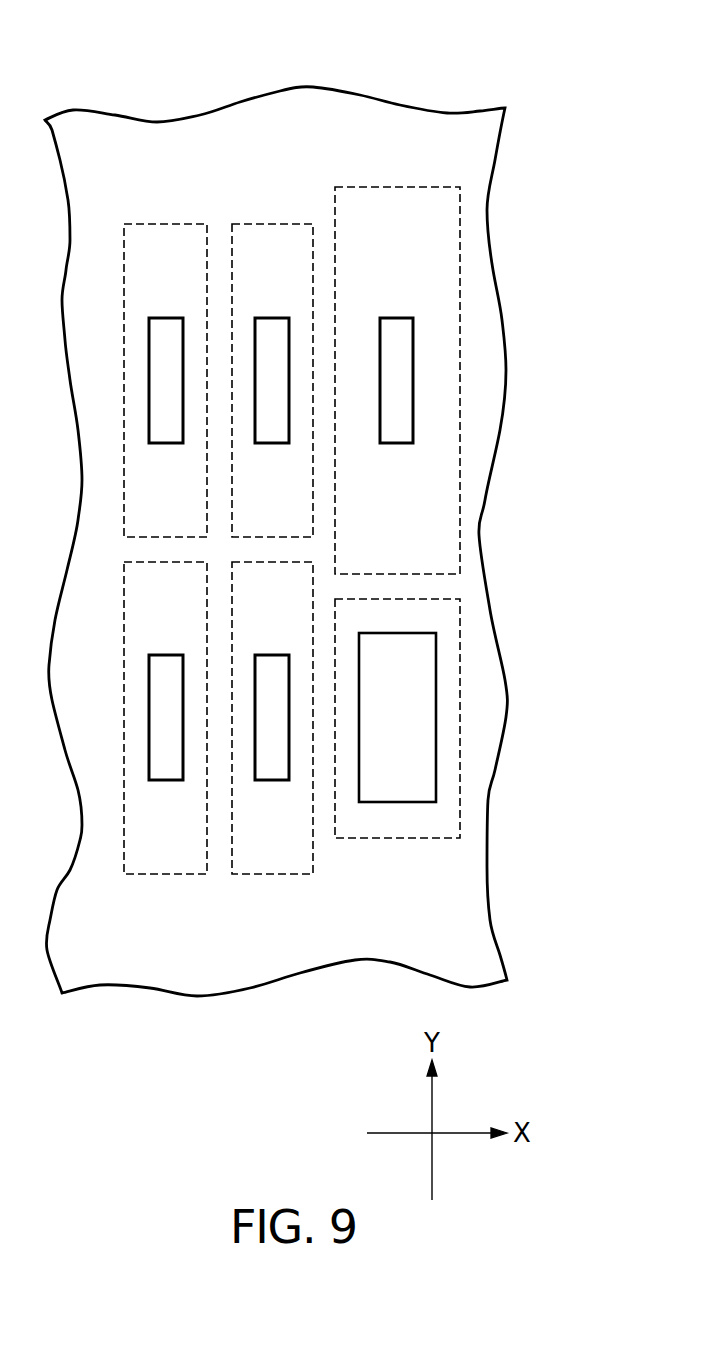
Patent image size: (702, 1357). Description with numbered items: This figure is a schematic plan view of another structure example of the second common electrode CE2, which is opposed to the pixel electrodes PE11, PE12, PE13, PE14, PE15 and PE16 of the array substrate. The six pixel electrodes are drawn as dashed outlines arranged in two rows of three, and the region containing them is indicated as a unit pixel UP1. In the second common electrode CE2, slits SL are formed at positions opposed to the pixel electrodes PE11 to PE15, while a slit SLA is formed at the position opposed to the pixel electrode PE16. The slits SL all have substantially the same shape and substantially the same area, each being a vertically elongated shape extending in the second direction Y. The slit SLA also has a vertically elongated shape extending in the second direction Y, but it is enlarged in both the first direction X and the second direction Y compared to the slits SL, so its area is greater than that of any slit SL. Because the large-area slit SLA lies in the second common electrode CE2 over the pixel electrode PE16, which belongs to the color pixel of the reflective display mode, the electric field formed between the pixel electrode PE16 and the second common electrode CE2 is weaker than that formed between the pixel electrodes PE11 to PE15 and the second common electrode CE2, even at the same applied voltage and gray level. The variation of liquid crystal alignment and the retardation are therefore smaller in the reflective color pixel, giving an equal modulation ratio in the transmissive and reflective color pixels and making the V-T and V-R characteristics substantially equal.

The second common electrode CE2 is at (353, 90).
The unit pixel UP1 is at (462, 869).
The pixel electrode PE11 is at (173, 224).
The pixel electrode PE12 is at (280, 224).
The pixel electrode PE13 is at (403, 187).
The pixel electrode PE14 is at (170, 874).
The pixel electrode PE15 is at (278, 874).
The pixel electrode PE16 is at (398, 838).
The slit SL is at (163, 443).
The slit SLA is at (373, 802).